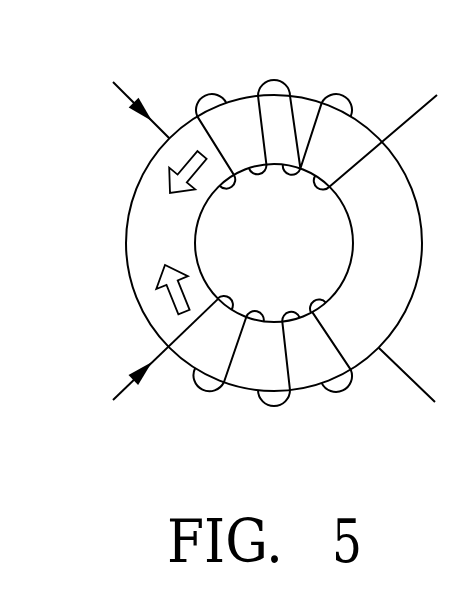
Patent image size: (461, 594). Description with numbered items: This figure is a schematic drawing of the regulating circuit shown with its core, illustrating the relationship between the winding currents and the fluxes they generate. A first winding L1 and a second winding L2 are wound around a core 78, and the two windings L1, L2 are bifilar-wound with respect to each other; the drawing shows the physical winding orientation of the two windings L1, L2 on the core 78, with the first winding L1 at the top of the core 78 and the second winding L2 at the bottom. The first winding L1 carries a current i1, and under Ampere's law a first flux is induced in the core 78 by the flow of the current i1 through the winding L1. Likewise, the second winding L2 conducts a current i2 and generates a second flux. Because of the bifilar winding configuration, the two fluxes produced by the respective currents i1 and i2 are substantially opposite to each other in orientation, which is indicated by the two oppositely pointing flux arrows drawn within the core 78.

The core 78 is at (403, 263).
The first winding L1 is at (284, 79).
The second winding L2 is at (285, 405).
The current i1 is at (116, 84).
The current i2 is at (121, 388).